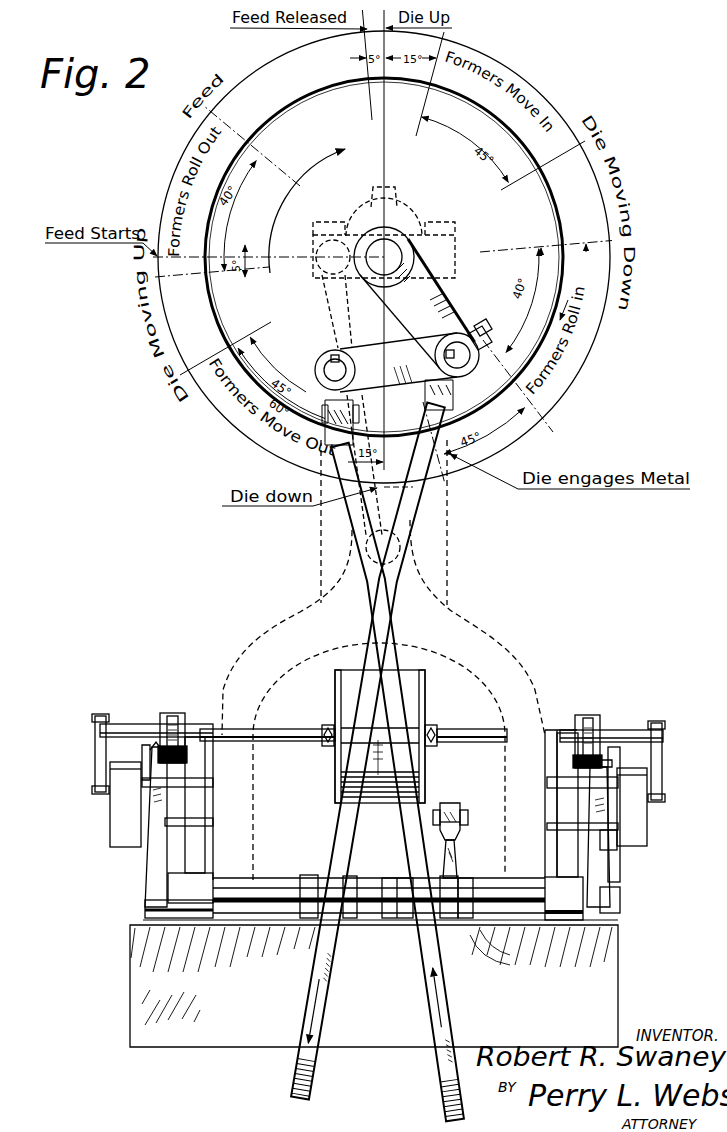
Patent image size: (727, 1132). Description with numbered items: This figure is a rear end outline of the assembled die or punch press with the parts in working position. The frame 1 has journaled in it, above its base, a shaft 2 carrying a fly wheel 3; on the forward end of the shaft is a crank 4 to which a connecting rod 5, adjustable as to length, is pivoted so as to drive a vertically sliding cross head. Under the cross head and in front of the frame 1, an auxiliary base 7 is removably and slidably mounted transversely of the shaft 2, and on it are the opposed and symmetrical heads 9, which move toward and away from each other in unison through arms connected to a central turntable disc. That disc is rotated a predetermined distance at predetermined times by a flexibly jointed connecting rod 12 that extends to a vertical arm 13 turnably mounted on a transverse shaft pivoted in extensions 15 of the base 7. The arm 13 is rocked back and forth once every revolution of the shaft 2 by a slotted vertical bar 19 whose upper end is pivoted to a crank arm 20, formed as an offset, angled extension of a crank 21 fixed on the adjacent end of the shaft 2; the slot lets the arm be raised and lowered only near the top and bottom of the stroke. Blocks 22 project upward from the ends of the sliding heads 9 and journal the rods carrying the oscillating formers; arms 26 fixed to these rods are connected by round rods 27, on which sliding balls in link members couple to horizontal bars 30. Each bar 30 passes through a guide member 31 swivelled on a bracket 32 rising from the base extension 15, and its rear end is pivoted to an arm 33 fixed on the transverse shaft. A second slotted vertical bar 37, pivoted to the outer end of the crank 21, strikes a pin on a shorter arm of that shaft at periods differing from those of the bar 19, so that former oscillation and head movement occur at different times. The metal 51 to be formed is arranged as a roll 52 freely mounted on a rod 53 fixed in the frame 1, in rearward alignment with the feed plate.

The frame 1 is at (288, 638).
The shaft 2 is at (392, 250).
The fly wheel 3 is at (577, 357).
The crank 4 is at (352, 223).
The connecting rod 5 is at (335, 302).
The auxiliary base 7 is at (142, 867).
The heads 9 is at (632, 840).
The connecting rod 12 is at (450, 803).
The vertical arm 13 is at (452, 858).
The extensions of the base 15 is at (618, 925).
The vertical bar 19 is at (432, 1028).
The crank arm 20 is at (338, 352).
The crank 21 is at (428, 293).
The blocks 22 is at (122, 812).
The arms 26 is at (100, 757).
The round rods 27 is at (123, 724).
The horizontal lever or bar 30 is at (173, 713).
The guide member 31 is at (167, 713).
The bracket 32 is at (570, 805).
The arms 33 is at (157, 842).
The vertical bar 37 is at (327, 988).
The metal 51 is at (403, 672).
The roll 52 is at (425, 712).
The rod 53 is at (288, 737).